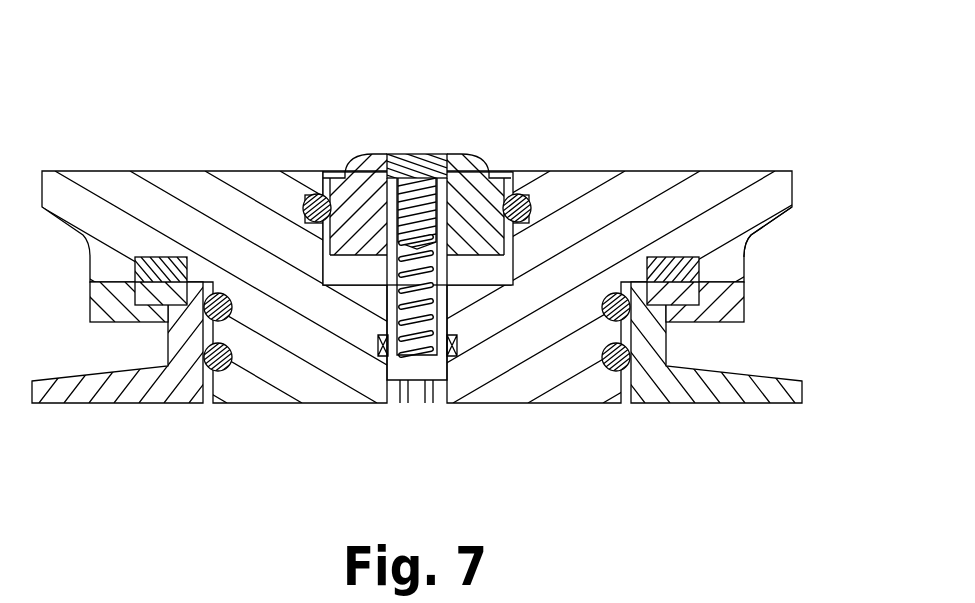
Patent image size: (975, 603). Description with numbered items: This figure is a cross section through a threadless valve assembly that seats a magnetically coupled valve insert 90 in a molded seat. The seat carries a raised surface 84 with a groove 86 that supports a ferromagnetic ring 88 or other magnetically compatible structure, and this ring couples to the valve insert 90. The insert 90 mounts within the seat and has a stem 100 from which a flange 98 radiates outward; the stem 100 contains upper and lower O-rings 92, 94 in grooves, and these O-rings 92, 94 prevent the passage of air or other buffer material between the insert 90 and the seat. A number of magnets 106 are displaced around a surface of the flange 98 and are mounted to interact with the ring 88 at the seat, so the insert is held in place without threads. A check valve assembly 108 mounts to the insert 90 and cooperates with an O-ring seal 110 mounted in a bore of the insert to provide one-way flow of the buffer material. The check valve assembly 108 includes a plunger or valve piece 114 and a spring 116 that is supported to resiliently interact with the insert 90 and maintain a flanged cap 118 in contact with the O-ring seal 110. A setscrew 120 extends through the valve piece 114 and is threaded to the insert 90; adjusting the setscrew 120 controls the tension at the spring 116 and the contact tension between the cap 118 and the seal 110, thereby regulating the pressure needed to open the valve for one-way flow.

The raised surface 84 is at (123, 268).
The groove 86 is at (140, 320).
The ferromagnetic ring 88 is at (165, 292).
The valve insert 90 is at (750, 170).
The upper O-ring 92 is at (195, 315).
The lower O-ring 94 is at (198, 368).
The flange 98 is at (782, 232).
The stem 100 is at (632, 388).
The magnets 106 is at (158, 170).
The check valve assembly 108 is at (363, 143).
The O-ring seal 110 is at (322, 190).
The valve piece 114 is at (462, 205).
The spring 116 is at (430, 280).
The flanged cap 118 is at (473, 150).
The setscrew 120 is at (415, 153).